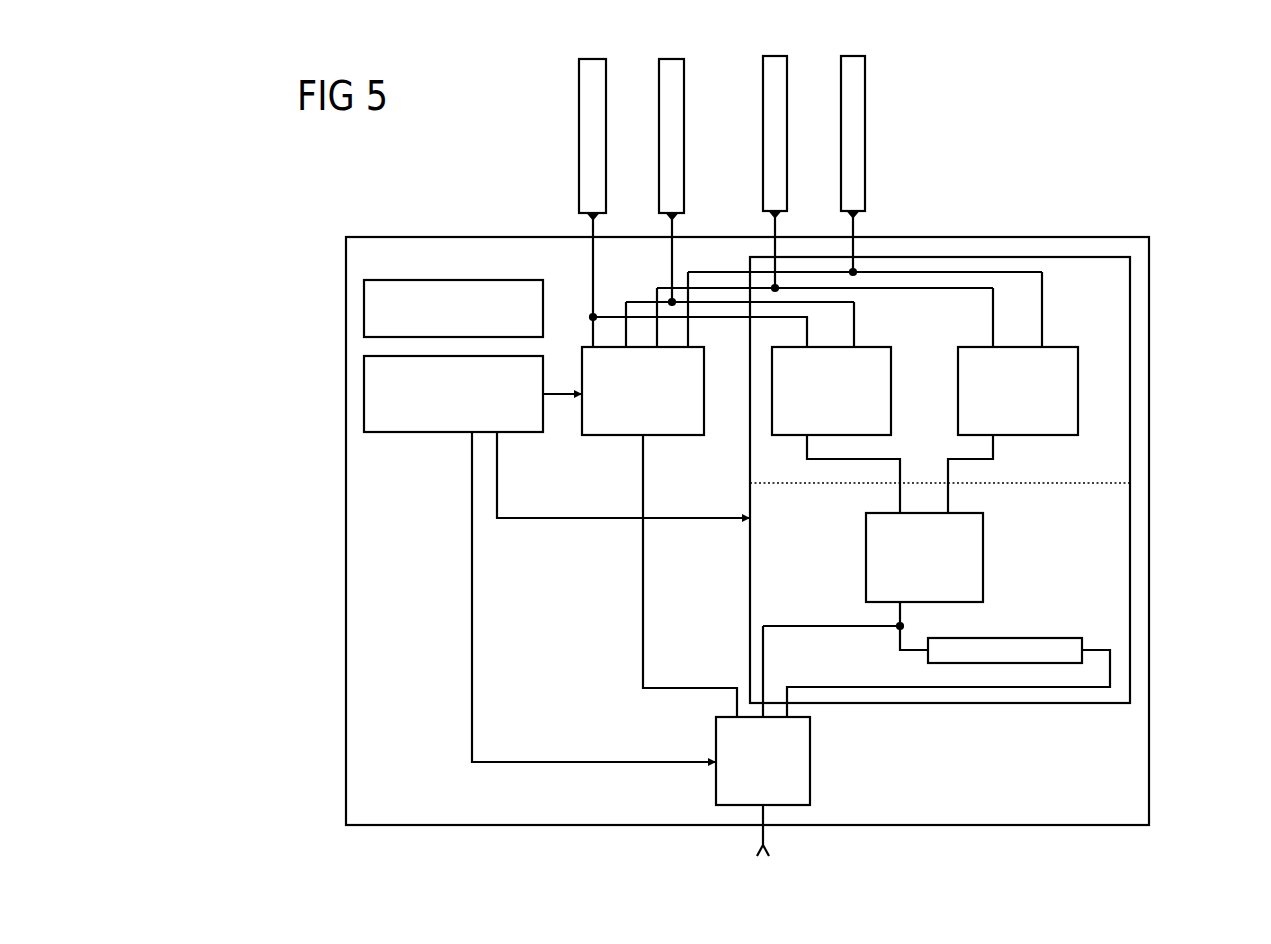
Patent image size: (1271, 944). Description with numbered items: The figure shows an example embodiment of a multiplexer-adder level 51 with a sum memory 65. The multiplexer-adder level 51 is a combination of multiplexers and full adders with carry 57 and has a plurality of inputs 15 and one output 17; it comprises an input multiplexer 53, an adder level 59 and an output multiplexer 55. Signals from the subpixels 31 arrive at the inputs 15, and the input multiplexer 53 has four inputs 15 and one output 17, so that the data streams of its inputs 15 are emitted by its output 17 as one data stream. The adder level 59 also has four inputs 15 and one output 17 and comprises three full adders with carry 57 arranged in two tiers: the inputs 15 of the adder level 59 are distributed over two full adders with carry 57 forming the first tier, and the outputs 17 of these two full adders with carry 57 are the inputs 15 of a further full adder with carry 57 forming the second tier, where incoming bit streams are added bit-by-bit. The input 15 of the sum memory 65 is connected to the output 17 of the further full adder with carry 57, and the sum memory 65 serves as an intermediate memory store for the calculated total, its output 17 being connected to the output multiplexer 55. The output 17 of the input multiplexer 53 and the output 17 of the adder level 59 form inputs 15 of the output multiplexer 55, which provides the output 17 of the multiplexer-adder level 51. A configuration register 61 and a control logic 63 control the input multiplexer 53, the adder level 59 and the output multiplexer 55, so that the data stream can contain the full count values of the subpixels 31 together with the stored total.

The input 15 is at (838, 722).
The output 17 is at (642, 472).
The subpixel 31 is at (579, 137).
The multiplexer-adder level 51 is at (302, 728).
The input multiplexer 53 is at (692, 437).
The output multiplexer 55 is at (811, 767).
The full adder with carry 57 is at (891, 397).
The adder level 59 is at (1131, 560).
The configuration register 61 is at (364, 309).
The control logic 63 is at (364, 393).
The sum memory 65 is at (1060, 638).